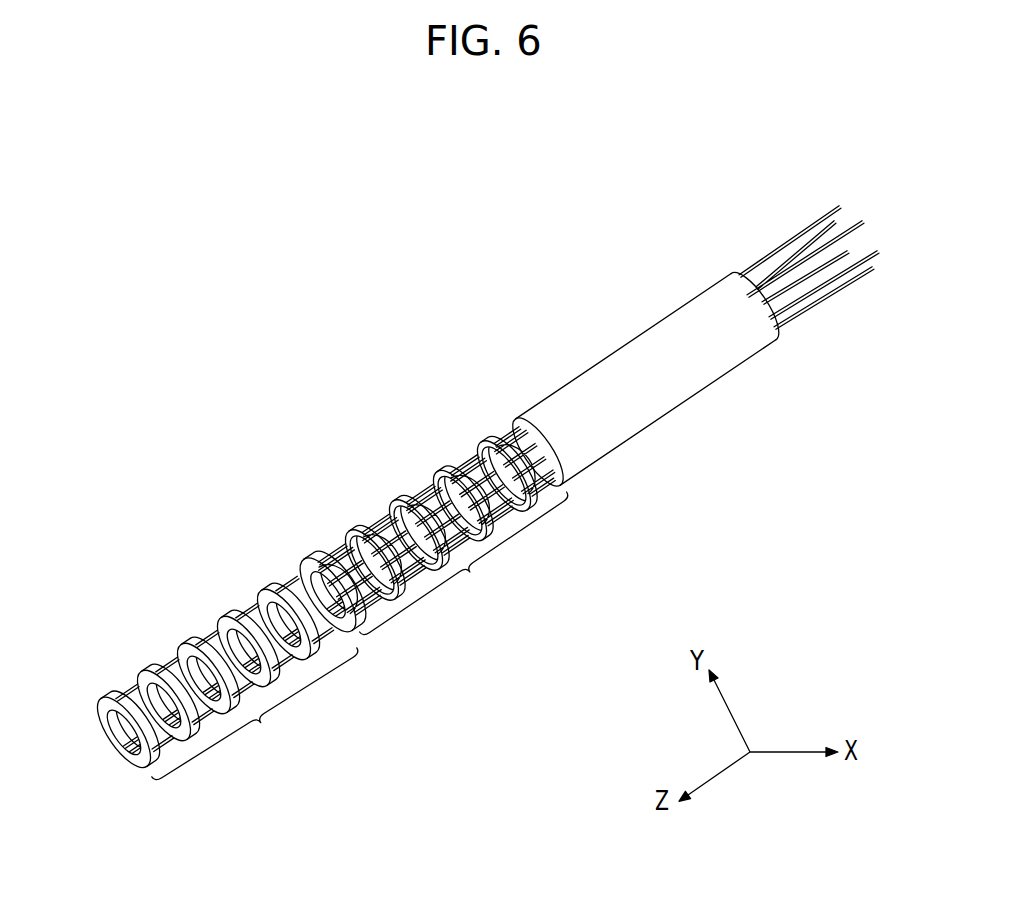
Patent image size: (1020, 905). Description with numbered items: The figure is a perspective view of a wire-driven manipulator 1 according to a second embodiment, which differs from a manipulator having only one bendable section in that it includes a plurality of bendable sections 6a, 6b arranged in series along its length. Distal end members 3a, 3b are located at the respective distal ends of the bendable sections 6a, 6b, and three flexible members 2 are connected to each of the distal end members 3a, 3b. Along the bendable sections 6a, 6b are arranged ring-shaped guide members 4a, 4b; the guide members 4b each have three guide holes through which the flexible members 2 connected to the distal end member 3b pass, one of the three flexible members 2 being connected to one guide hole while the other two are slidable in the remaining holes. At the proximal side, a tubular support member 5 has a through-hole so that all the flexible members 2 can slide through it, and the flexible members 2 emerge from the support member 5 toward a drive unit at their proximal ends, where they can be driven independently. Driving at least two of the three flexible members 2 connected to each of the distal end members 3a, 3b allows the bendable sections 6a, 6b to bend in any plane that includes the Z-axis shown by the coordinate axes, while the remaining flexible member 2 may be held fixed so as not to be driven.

The wire-driven manipulator 1 is at (471, 493).
The flexible members 2 is at (803, 318).
The distal end member 3a is at (315, 558).
The distal end member 3b is at (111, 695).
The guide members 4a is at (489, 440).
The guide members 4b is at (271, 588).
The support member 5 is at (606, 355).
The bendable section 6a is at (464, 563).
The bendable section 6b is at (255, 714).